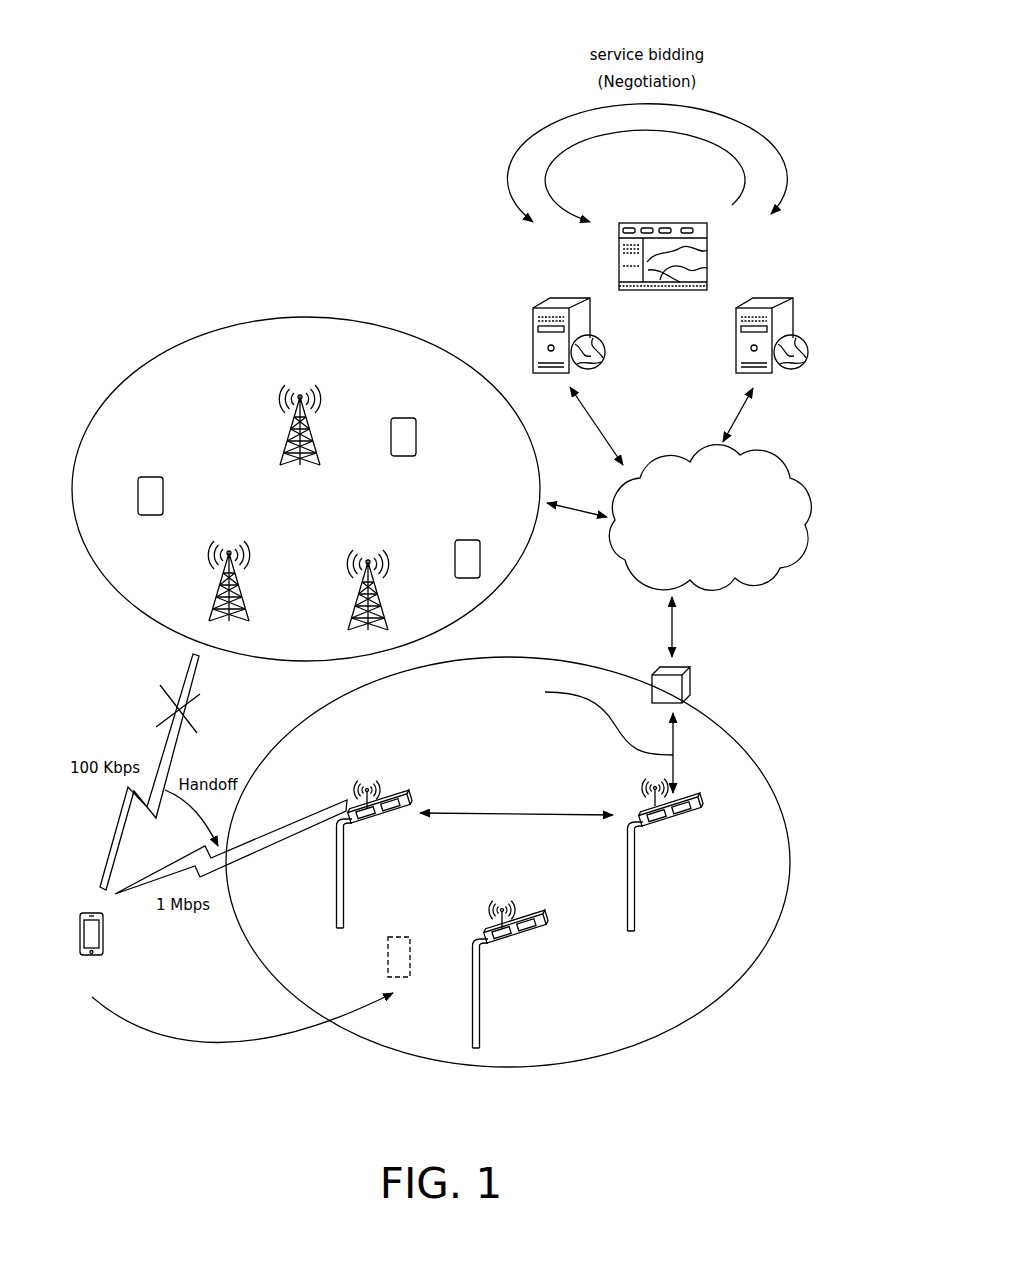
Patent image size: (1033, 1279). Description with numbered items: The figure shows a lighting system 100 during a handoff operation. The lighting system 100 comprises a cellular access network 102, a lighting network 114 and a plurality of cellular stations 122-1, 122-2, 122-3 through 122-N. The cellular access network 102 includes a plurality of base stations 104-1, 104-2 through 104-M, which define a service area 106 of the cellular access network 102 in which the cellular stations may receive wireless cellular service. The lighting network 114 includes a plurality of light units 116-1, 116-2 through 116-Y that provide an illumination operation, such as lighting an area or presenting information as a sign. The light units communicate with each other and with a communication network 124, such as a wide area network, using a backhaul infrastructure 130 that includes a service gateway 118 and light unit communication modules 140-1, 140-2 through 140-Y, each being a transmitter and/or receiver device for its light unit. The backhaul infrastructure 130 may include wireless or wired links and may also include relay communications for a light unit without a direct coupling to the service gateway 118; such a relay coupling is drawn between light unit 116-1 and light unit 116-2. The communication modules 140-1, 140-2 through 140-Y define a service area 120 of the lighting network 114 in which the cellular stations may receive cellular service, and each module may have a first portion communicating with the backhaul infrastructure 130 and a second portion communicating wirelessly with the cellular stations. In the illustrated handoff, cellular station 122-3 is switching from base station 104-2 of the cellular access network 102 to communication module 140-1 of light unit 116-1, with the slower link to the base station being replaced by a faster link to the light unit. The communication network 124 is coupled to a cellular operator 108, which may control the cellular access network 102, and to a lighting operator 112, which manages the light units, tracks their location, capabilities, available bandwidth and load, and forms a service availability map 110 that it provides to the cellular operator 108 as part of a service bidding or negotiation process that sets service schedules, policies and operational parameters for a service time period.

The lighting system 100 is at (157, 128).
The cellular access network 102 is at (306, 316).
The base station 104-1 is at (290, 433).
The base station 104-2 is at (223, 590).
The base station 104-M is at (353, 597).
The service area 106 is at (220, 372).
The cellular operator 108 is at (533, 322).
The SAM (service allocation manager) 110 is at (650, 220).
The lighting operator 112 is at (736, 356).
The lighting network 114 is at (670, 1033).
The light unit 116-1 is at (405, 805).
The light unit 116-2 is at (692, 808).
The light unit 116-Y is at (537, 922).
The service gateway 118 is at (652, 676).
The service area 120 is at (379, 719).
The cellular station 122-1 is at (150, 477).
The cellular station 122-2 is at (400, 418).
The cellular station 122-3 is at (103, 930).
The cellular station 122-N is at (468, 540).
The communication network 124 is at (733, 580).
The backhaul infrastructure 130 is at (518, 813).
The communication module 140-1 is at (353, 790).
The communication module 140-2 is at (641, 788).
The communication module 140-Y is at (488, 910).